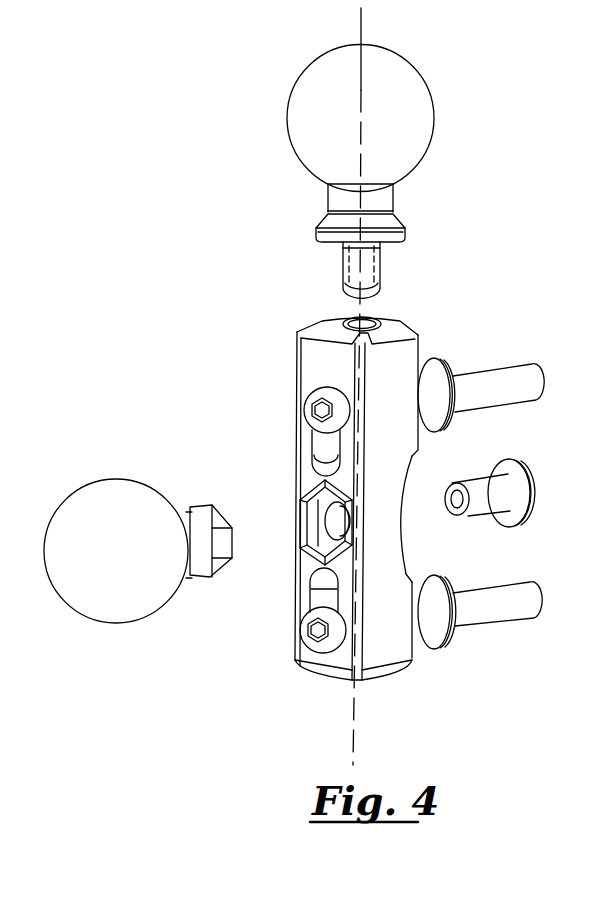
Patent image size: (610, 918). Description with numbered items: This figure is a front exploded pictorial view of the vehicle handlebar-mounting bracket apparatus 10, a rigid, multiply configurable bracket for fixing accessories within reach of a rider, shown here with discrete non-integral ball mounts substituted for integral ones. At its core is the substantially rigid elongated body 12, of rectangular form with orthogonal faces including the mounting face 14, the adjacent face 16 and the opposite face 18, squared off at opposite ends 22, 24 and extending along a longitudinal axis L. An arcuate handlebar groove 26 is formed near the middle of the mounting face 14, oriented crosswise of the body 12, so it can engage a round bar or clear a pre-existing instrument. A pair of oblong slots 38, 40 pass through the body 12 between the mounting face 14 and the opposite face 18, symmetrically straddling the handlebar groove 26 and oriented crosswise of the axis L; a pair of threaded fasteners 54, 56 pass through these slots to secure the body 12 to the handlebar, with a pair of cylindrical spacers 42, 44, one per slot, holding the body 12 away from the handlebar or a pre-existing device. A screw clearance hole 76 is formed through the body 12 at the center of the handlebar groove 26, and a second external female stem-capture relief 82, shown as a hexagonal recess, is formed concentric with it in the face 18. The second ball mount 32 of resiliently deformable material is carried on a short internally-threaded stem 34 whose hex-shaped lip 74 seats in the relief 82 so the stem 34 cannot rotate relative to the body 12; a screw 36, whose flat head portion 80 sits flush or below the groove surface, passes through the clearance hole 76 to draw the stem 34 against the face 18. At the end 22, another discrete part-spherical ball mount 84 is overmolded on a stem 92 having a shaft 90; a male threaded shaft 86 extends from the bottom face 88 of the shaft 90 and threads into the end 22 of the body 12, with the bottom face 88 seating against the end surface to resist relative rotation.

The vehicle handlebar-mounting bracket apparatus 10 is at (507, 191).
The body 12 is at (396, 666).
The mounting face 14 is at (426, 348).
The face 16 is at (396, 406).
The face 18 is at (320, 362).
The end 22 is at (332, 323).
The end 24 is at (340, 680).
The handlebar groove 26 is at (400, 548).
The second ball mount 32 is at (94, 502).
The stem 34 is at (190, 510).
The screw 36 is at (450, 497).
The oblong slot 38 is at (322, 462).
The oblong slot 40 is at (315, 590).
The spacer 42 is at (462, 365).
The spacer 44 is at (445, 583).
The threaded fastener 54 is at (312, 400).
The threaded fastener 56 is at (298, 650).
The hex-shaped lip 74 is at (232, 520).
The screw clearance hole 76 is at (303, 548).
The flat head portion 80 is at (536, 470).
The second external female stem-capture relief 82 is at (310, 527).
The discrete non-integral part-spherical ball mount 84 is at (427, 95).
The male threaded shaft 86 is at (343, 266).
The bottom face 88 is at (382, 262).
The shaft 90 is at (330, 192).
The stem 92 is at (394, 217).
The longitudinal axis L is at (365, 22).